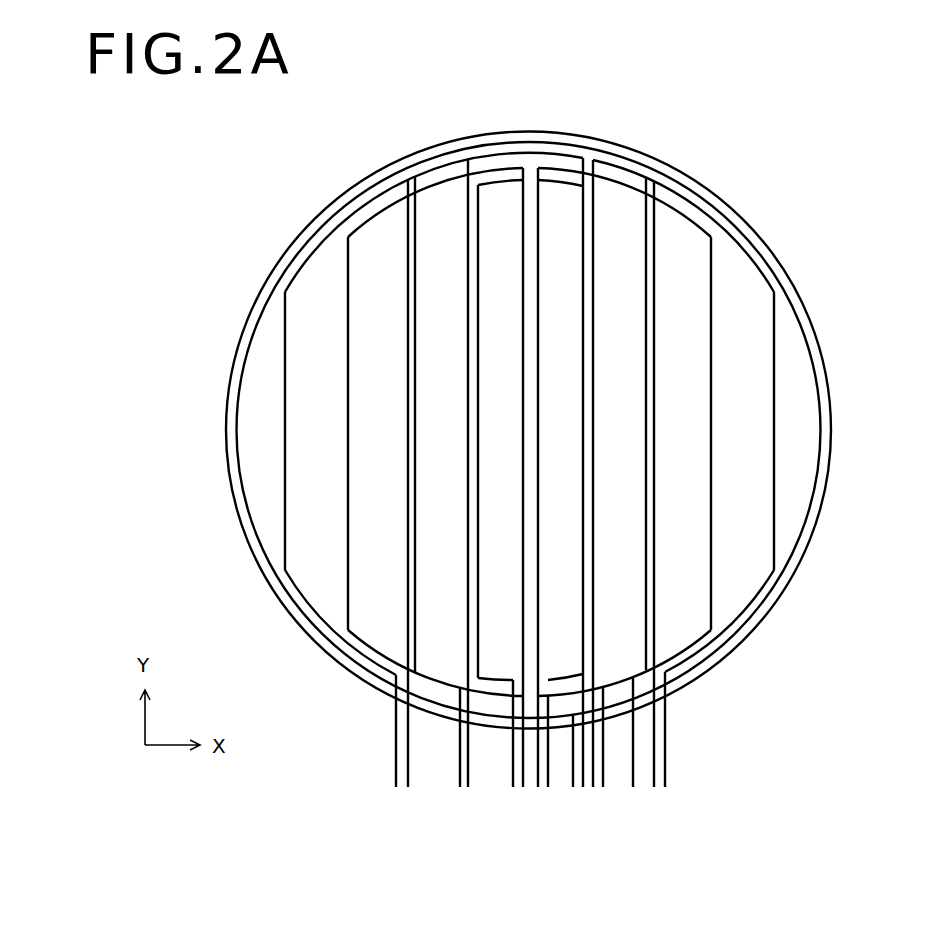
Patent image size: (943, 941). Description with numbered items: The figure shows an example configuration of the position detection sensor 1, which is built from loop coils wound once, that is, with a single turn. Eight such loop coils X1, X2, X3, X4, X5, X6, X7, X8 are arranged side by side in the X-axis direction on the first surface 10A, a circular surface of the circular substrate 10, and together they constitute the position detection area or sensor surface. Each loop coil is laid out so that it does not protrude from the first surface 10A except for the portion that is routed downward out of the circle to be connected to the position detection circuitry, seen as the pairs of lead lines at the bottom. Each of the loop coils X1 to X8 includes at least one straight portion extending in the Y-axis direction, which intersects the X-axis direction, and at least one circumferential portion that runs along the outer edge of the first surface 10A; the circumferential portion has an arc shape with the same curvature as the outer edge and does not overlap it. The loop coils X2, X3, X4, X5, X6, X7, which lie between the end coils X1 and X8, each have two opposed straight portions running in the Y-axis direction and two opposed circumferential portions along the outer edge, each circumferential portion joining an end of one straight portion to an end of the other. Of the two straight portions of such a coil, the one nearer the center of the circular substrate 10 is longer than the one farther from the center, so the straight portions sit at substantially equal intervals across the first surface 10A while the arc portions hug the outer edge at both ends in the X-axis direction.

The position detection sensor 1 is at (839, 300).
The circular substrate 10 is at (508, 128).
The first surface 10A is at (615, 150).
The loop coil X1 is at (402, 790).
The loop coil X2 is at (465, 790).
The loop coil X3 is at (518, 790).
The loop coil X4 is at (542, 790).
The loop coil X5 is at (578, 790).
The loop coil X6 is at (597, 790).
The loop coil X7 is at (639, 790).
The loop coil X8 is at (660, 790).